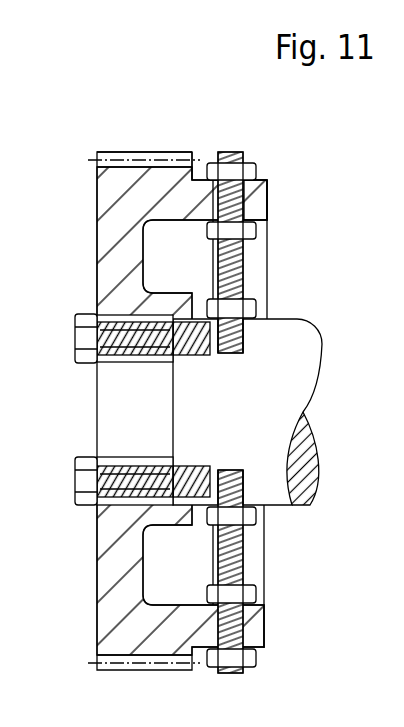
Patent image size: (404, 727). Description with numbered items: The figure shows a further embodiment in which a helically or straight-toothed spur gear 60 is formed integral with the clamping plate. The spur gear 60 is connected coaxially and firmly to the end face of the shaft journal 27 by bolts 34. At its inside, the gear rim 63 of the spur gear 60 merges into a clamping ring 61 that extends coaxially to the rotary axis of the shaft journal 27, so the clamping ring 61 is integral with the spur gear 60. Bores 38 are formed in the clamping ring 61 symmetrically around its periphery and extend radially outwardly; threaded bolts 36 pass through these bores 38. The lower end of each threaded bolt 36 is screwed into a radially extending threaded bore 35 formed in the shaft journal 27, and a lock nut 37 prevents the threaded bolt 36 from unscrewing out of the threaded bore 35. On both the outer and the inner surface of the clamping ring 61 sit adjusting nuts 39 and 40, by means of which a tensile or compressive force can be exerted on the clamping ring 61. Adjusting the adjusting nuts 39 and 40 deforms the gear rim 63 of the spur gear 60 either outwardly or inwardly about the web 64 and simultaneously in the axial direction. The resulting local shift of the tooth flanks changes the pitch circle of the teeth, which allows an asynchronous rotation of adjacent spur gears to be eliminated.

The shaft journal 27 is at (278, 400).
The bolts 34 is at (80, 455).
The threaded bores 35 is at (243, 338).
The threaded bolts 36 is at (245, 272).
The lock nuts 37 is at (256, 308).
The bores 38 is at (247, 213).
The adjusting nut 39 is at (256, 233).
The adjusting nut 40 is at (250, 163).
The spur gear 60 is at (181, 150).
The clamping ring 61 is at (268, 192).
The gear rim 63 is at (120, 176).
The web 64 is at (105, 245).